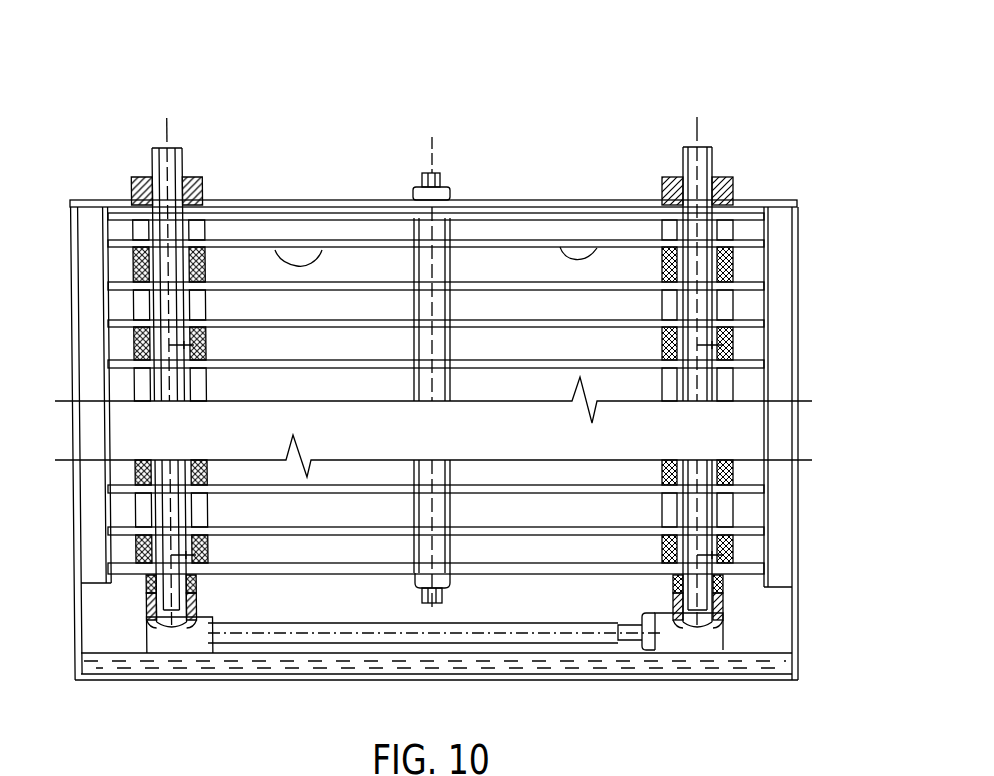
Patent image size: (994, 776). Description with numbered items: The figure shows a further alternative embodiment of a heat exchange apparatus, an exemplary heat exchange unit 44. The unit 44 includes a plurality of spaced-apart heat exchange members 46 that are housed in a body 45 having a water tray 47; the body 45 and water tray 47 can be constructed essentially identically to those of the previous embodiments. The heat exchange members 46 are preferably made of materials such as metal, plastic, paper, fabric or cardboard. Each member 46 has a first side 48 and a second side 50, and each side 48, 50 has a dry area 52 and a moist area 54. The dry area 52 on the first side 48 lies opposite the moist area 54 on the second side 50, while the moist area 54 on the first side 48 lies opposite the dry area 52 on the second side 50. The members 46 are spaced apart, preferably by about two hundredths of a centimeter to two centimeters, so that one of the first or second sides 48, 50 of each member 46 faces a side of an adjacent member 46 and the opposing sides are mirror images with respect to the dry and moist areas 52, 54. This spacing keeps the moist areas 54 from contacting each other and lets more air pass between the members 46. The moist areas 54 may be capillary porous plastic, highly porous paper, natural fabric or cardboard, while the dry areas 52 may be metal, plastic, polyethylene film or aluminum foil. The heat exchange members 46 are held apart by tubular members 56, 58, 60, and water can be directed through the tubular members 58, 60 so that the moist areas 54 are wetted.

The heat exchange unit 44 is at (738, 46).
The body 45 is at (77, 505).
The heat exchange members 46 is at (758, 358).
The water tray 47 is at (187, 665).
The first side 48 is at (274, 238).
The second side 50 is at (322, 252).
The dry area 52 is at (612, 235).
The moist area 54 is at (562, 248).
The tubular member 56 is at (442, 188).
The tubular member 58 is at (183, 178).
The tubular member 60 is at (683, 178).